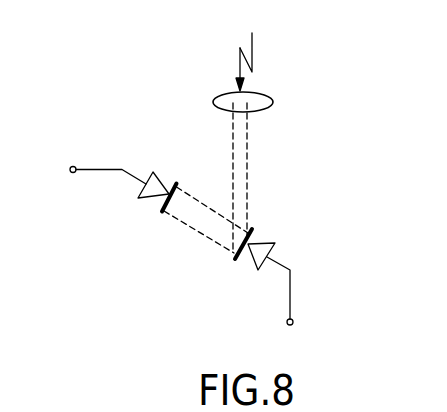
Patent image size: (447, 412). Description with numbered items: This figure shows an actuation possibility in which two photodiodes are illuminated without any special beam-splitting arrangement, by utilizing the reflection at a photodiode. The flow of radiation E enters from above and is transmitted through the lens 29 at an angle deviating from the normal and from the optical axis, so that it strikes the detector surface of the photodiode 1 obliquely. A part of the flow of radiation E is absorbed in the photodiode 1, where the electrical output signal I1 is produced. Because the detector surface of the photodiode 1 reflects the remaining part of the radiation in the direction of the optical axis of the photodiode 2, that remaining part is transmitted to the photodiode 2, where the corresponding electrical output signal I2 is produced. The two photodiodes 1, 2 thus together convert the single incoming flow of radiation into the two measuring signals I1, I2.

The photodiode 1 is at (262, 242).
The photodiode 2 is at (157, 173).
The lens 29 is at (273, 104).
The flow of radiation E is at (253, 52).
The measuring signal I1 is at (326, 330).
The measuring signal I2 is at (85, 153).